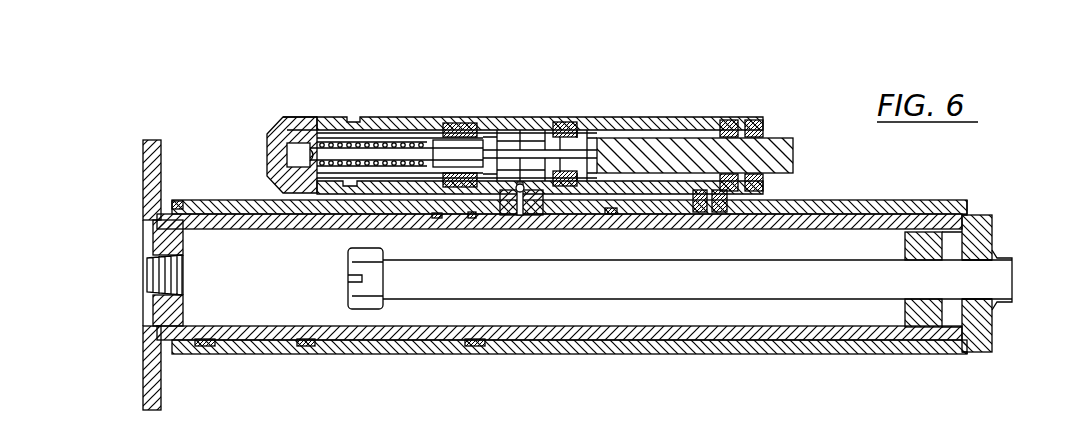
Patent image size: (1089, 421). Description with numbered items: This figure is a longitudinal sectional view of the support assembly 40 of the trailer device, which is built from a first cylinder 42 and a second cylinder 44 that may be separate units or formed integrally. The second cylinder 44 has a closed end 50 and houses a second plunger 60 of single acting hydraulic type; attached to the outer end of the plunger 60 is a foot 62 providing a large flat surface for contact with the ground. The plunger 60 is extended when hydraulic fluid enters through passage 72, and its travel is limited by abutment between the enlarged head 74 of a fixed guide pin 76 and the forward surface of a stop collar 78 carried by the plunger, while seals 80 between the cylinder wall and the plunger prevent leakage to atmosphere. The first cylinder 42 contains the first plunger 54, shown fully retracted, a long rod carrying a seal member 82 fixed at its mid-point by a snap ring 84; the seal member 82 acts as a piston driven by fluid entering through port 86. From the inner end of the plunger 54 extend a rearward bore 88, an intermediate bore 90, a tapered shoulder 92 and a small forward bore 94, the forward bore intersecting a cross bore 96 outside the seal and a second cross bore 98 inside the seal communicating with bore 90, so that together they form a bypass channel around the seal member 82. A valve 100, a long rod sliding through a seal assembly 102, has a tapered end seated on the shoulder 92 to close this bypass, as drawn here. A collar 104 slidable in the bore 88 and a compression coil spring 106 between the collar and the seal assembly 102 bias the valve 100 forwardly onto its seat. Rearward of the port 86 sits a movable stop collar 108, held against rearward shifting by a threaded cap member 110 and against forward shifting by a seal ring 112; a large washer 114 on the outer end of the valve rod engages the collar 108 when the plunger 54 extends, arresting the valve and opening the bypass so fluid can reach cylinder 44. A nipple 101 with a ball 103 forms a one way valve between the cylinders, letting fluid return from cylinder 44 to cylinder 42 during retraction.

The support assembly 40 is at (768, 197).
The first cylinder 42 is at (600, 128).
The second cylinder 44 is at (695, 341).
The closed end 50 is at (985, 235).
The first plunger 54 is at (772, 148).
The second plunger 60 is at (196, 205).
The foot 62 is at (145, 180).
The passage 72 is at (697, 212).
The enlarged head 74 is at (348, 284).
The fixed guide pin 76 is at (678, 286).
The stop collar 78 is at (910, 318).
The seals 80 is at (203, 347).
The seal member 82 is at (568, 118).
The snap ring 84 is at (637, 130).
The port 86 is at (522, 118).
The rearward bore 88 is at (366, 118).
The intermediate bore 90 is at (495, 118).
The tapered shoulder 92 is at (587, 127).
The small forward bore 94 is at (611, 214).
The cross bore 96 is at (652, 128).
The second cross bore 98 is at (535, 120).
The valve 100 is at (548, 198).
The nipple 101 is at (511, 214).
The seal assembly 102 is at (318, 117).
The ball 103 is at (472, 218).
The collar 104 is at (435, 118).
The compression coil spring 106 is at (400, 120).
The stop collar 108 is at (438, 218).
The cap member 110 is at (267, 146).
The seal ring 112 is at (481, 120).
The washer 114 is at (288, 118).